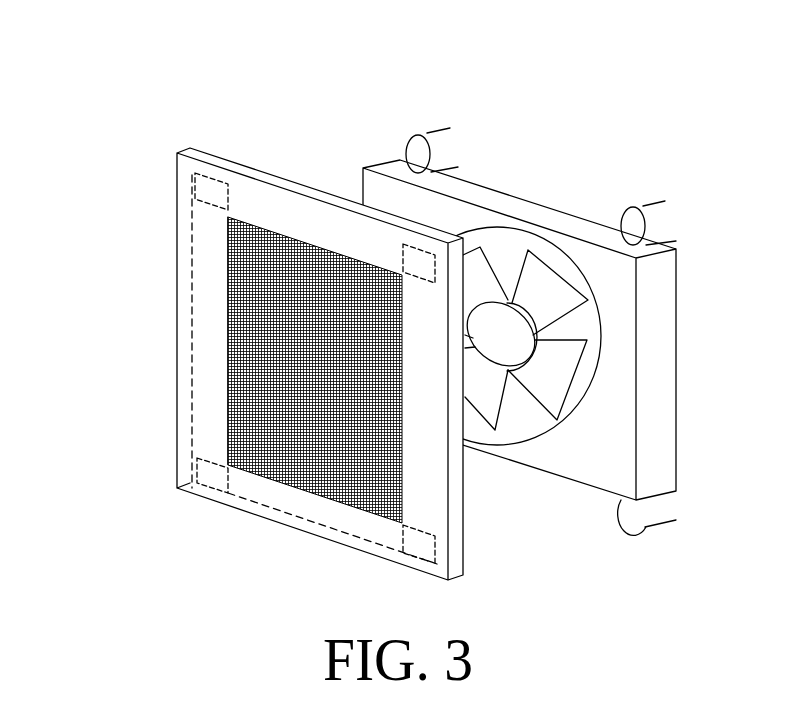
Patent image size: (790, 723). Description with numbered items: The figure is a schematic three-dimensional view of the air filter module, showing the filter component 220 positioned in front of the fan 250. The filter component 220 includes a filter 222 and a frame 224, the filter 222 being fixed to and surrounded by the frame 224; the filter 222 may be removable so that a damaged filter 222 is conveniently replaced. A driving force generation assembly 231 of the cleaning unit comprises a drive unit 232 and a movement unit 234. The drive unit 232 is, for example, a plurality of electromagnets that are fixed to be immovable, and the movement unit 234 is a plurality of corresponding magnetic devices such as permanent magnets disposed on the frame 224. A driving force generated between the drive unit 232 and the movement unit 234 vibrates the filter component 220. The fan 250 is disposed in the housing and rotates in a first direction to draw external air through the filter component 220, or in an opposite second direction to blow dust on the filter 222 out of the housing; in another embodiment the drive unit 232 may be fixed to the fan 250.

The filter component 220 is at (240, 364).
The filter 222 is at (277, 412).
The frame 224 is at (184, 429).
The driving force generation assembly 231 is at (435, 290).
The drive unit 232 is at (405, 154).
The movement unit 234 is at (390, 72).
The fan 250 is at (667, 377).